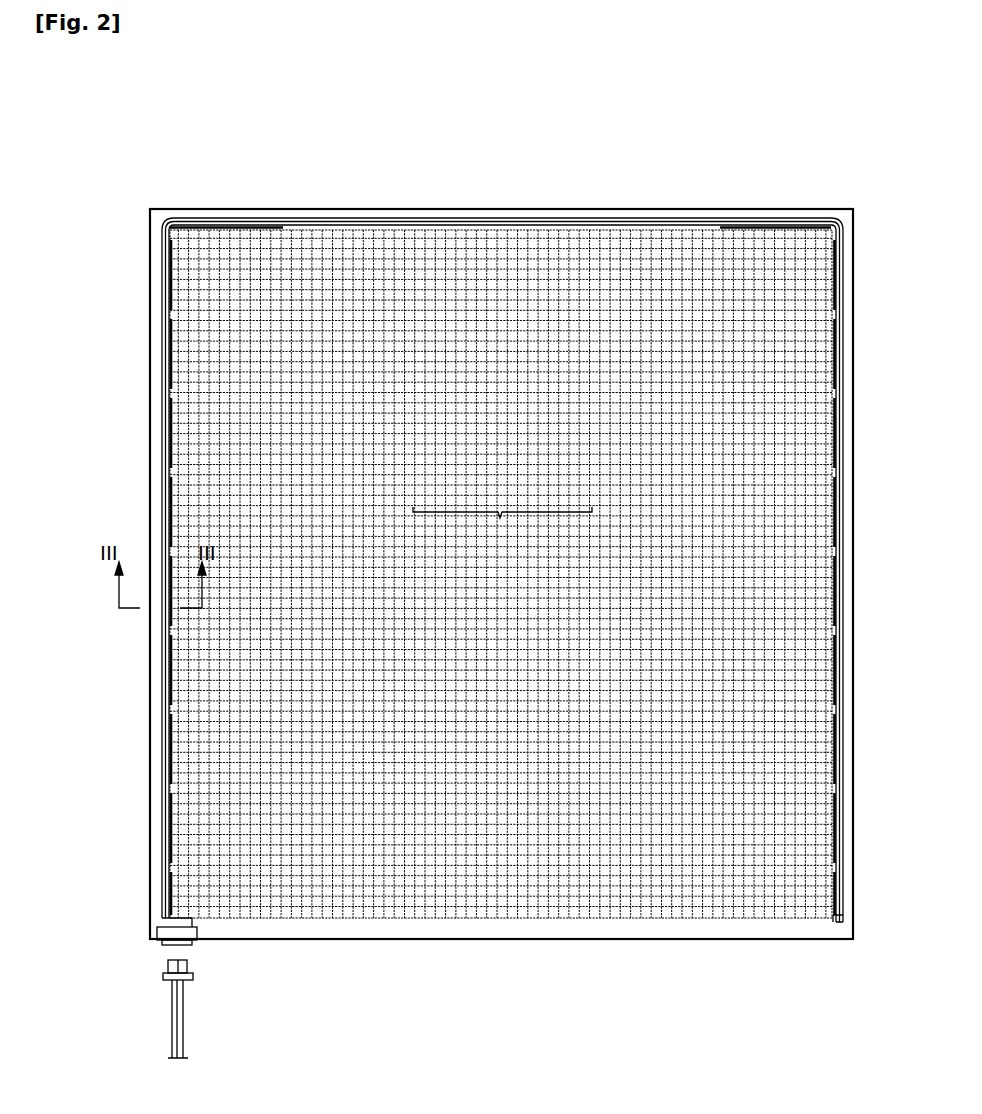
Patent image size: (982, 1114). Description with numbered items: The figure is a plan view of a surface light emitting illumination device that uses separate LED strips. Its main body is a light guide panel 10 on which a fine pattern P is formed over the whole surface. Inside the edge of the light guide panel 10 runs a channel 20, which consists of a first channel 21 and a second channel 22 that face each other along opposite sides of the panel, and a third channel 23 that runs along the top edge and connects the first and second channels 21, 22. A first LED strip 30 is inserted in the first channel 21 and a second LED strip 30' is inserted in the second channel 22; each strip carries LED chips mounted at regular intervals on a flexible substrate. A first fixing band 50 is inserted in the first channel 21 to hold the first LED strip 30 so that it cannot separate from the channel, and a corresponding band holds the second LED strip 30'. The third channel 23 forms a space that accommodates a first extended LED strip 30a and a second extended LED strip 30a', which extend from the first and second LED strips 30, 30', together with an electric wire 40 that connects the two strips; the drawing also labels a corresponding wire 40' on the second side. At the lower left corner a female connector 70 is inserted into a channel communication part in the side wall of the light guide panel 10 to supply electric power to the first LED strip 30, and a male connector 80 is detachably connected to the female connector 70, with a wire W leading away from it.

The light guide panel 10 is at (508, 920).
The fine pattern P is at (775, 356).
The first fixing band 50 is at (378, 218).
The first extended LED strip 30a is at (226, 177).
The second extended LED strip 30a' is at (775, 177).
The first LED strip 30 is at (120, 579).
The electric wire 40 is at (121, 577).
The second LED strip 30' is at (883, 581).
The heating wire 40' is at (884, 577).
The channel 20 is at (502, 527).
The first channel 21 is at (170, 492).
The second channel 22 is at (832, 488).
The third channel 23 is at (502, 228).
The female connector 70 is at (195, 945).
The male connector 80 is at (165, 970).
The wire W is at (183, 1020).